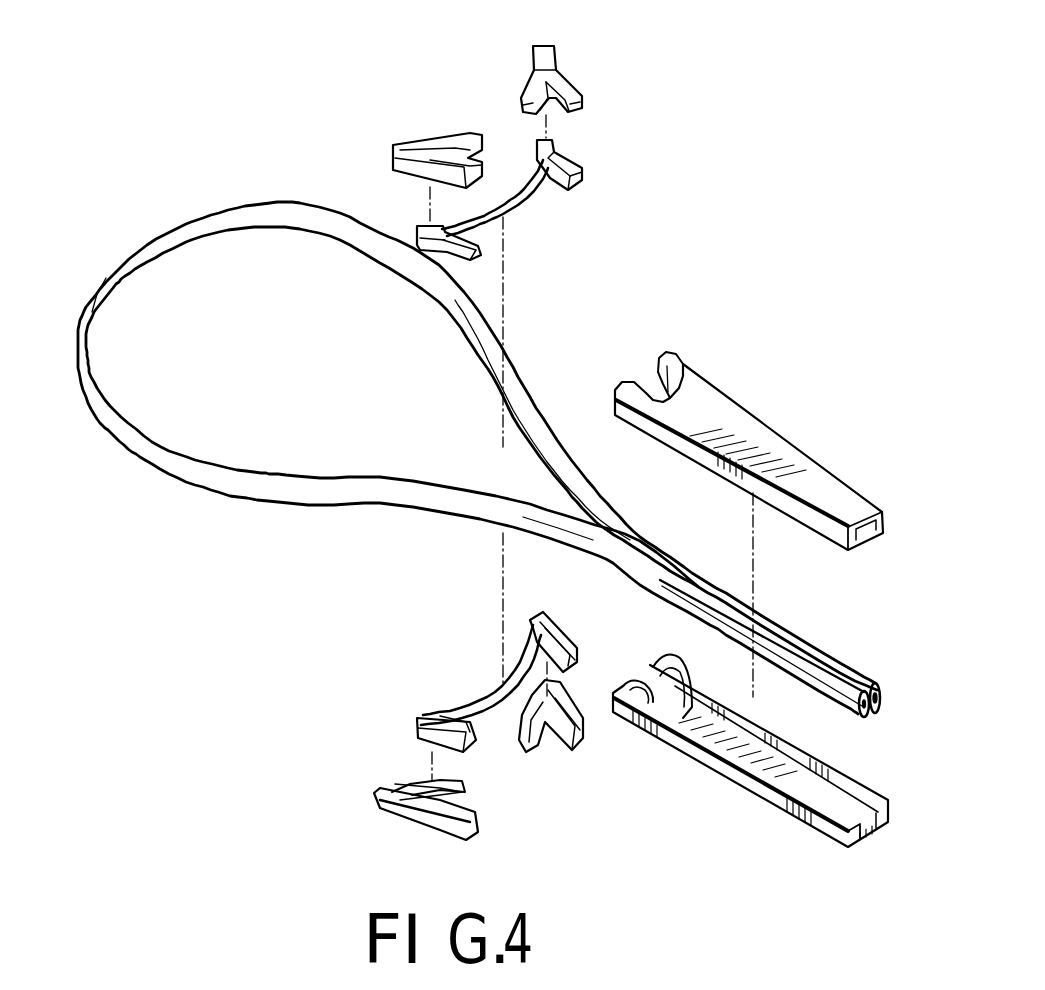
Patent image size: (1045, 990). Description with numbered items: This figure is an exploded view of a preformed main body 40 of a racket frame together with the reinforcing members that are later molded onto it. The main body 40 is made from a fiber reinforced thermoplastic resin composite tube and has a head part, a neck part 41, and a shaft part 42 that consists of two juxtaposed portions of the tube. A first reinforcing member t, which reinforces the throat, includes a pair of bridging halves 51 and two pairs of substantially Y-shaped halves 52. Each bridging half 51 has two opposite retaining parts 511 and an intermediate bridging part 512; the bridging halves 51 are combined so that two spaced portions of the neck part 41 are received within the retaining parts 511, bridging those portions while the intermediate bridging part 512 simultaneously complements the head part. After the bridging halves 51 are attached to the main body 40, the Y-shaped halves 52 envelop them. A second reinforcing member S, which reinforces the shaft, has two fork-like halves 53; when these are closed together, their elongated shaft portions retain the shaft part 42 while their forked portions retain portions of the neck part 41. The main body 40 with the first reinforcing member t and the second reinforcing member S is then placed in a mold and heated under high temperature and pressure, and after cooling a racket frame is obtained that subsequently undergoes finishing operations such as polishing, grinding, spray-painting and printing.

The preformed main body 40 is at (479, 459).
The neck part 41 is at (483, 510).
The shaft part 42 is at (807, 663).
The bridging half 51 is at (492, 217).
The retaining part 511 is at (560, 157).
The intermediate bridging part 512 is at (527, 200).
The Y-shaped half 52 is at (435, 148).
The fork-like half 53 is at (733, 422).
The second reinforcing member S is at (842, 762).
The first reinforcing member t is at (350, 769).